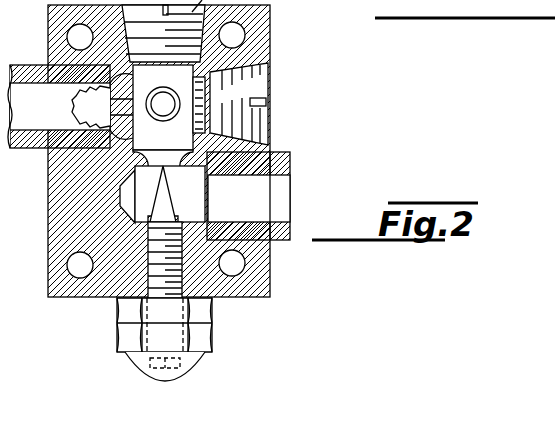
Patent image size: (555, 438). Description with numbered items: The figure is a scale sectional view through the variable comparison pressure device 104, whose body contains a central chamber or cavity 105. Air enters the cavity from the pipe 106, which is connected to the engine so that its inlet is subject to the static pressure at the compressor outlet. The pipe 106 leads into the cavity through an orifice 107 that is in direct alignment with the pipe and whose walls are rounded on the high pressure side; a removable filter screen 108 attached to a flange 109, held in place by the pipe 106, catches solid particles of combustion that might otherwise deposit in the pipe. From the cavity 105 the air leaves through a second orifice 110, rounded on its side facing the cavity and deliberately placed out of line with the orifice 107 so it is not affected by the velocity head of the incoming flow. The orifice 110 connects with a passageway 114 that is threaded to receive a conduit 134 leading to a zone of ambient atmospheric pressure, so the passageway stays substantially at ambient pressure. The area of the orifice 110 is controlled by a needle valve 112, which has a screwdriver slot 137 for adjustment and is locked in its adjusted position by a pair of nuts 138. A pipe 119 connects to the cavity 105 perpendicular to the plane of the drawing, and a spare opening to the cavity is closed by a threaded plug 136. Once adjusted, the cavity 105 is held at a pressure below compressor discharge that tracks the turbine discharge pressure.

The pressure device 104 is at (285, 43).
The central chamber or cavity 105 is at (163, 107).
The pipe 106 is at (60, 89).
The orifice 107 is at (112, 104).
The removable filter screen 108 is at (72, 106).
The flange 109 is at (115, 191).
The second orifice 110 is at (170, 194).
The needle valve 112 is at (162, 196).
The passageway 114 is at (198, 210).
The pipe 119 is at (166, 93).
The conduit 134 is at (284, 210).
The threaded plug 136 is at (266, 78).
The screwdriver slot 137 is at (165, 372).
The nuts 138 is at (203, 330).